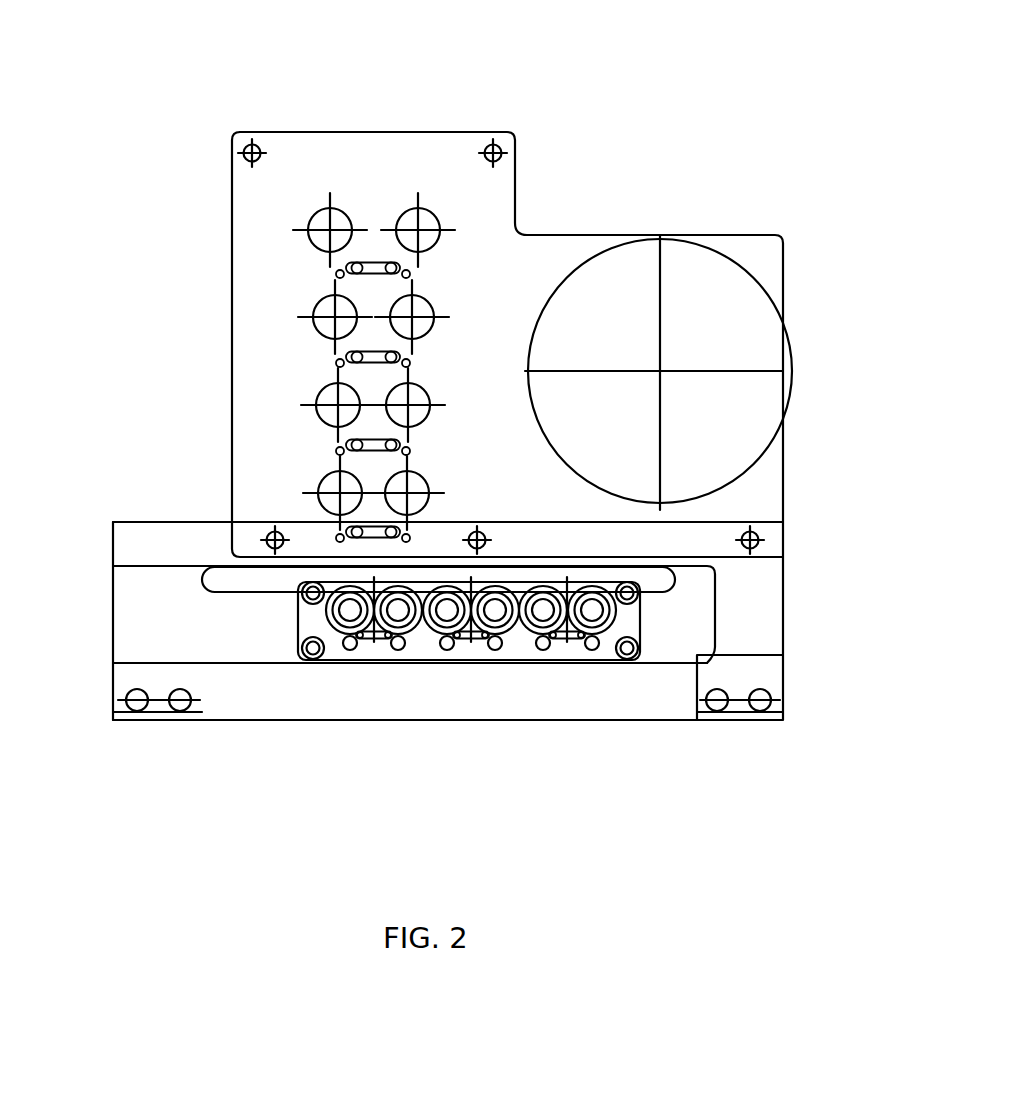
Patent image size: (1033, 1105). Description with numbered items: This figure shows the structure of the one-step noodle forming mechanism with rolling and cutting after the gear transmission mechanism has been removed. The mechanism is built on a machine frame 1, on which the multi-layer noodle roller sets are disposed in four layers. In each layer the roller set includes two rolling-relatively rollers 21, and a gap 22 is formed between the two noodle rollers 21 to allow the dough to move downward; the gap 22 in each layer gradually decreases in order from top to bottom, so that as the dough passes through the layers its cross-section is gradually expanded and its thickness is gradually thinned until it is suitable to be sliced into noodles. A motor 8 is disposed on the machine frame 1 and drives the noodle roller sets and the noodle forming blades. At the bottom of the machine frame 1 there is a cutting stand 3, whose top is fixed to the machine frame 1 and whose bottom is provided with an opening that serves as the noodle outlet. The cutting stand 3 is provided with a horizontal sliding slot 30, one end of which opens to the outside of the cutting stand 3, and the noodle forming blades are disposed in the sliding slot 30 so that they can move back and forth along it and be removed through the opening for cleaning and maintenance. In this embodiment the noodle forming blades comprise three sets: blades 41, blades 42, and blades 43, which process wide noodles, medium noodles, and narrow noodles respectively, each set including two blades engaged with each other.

The machine frame 1 is at (243, 313).
The motor 8 is at (685, 268).
The noodle rollers 21 is at (417, 222).
The gap 22 is at (368, 207).
The sliding slot 30 is at (153, 627).
The cutting stand 3 is at (298, 697).
The blades 41 is at (365, 635).
The blades 42 is at (489, 645).
The blades 43 is at (603, 645).